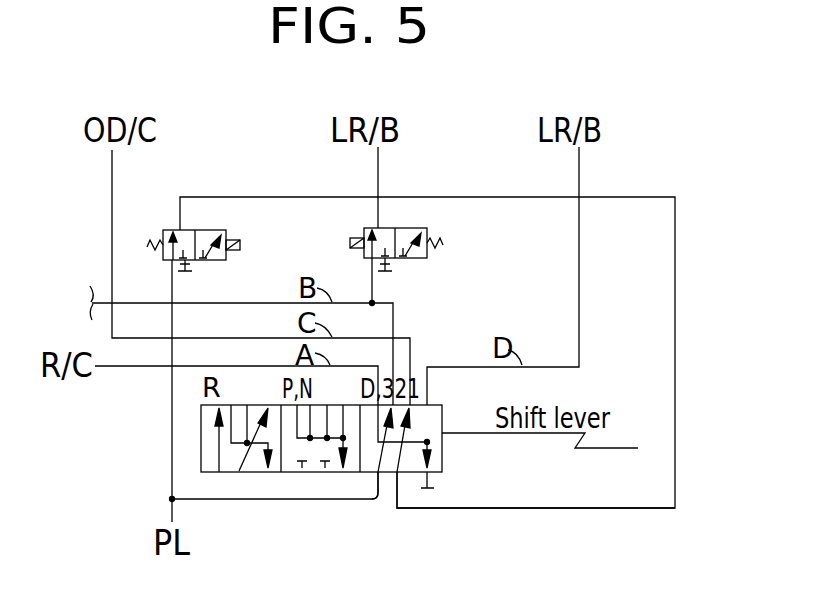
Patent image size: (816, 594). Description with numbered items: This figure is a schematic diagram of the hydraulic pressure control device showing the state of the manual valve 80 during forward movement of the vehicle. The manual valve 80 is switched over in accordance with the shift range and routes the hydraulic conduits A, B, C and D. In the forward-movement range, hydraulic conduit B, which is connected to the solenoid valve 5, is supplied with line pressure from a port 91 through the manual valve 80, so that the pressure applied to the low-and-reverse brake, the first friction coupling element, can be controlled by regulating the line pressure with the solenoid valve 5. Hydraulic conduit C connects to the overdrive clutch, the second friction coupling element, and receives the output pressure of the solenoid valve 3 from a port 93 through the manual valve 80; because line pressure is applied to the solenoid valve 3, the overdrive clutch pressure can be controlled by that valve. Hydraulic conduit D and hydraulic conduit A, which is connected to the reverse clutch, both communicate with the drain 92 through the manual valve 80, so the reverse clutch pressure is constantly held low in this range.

The solenoid valve 3 is at (227, 229).
The solenoid valve 5 is at (427, 228).
The manual valve 80 is at (440, 405).
The port 91 is at (383, 503).
The drain 92 is at (432, 481).
The port 93 is at (390, 488).